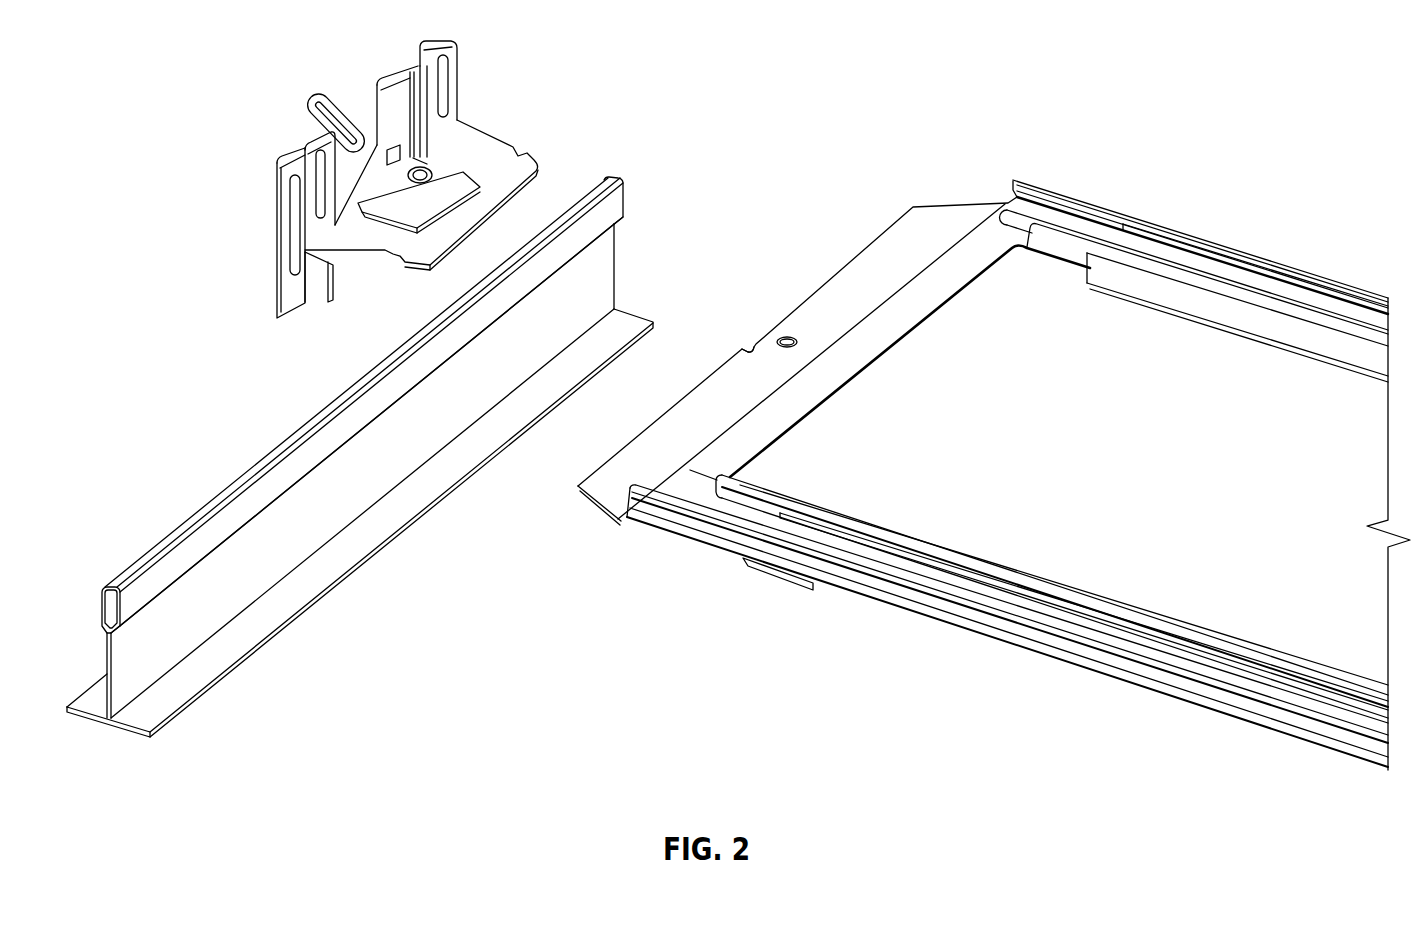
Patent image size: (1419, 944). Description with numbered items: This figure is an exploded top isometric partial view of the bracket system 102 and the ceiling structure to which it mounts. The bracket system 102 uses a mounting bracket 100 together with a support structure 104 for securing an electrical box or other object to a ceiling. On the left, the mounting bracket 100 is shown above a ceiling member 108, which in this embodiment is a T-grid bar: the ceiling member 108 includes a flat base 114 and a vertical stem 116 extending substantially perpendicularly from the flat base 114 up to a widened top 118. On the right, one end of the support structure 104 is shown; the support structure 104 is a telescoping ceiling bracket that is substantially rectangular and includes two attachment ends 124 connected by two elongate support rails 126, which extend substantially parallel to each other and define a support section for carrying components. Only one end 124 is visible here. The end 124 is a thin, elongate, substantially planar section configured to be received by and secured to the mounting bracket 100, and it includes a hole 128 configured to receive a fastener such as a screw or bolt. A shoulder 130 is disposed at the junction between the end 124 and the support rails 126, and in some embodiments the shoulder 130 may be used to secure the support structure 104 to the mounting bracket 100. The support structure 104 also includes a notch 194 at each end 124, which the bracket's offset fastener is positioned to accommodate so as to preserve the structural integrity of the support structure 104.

The mounting bracket 100 is at (313, 153).
The bracket system 102 is at (994, 437).
The support structure 104 is at (773, 553).
The ceiling member 108 is at (355, 472).
The flat base 114 is at (123, 732).
The vertical stem 116 is at (213, 605).
The widened top 118 is at (168, 547).
The attachment end 124 is at (834, 361).
The elongate support rail 126 is at (1175, 247).
The hole 128 is at (795, 334).
The shoulder 130 is at (777, 393).
The notch 194 is at (743, 338).